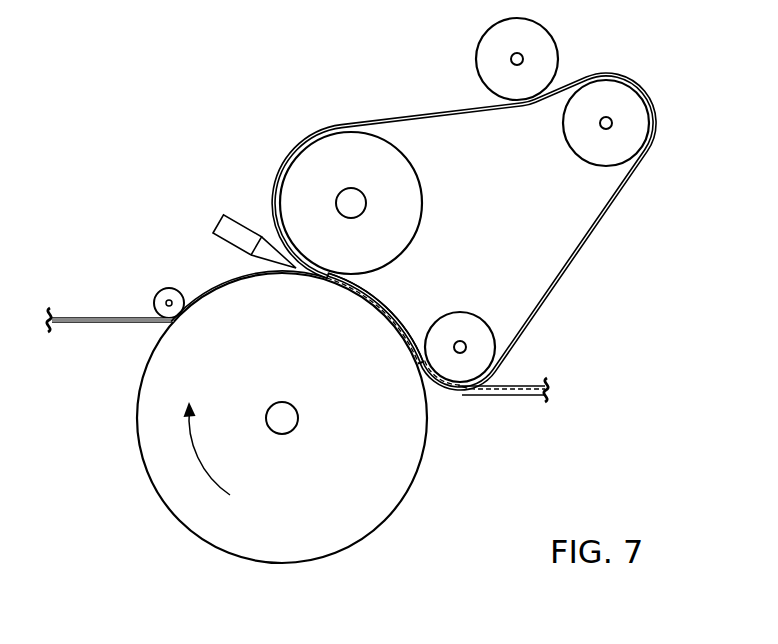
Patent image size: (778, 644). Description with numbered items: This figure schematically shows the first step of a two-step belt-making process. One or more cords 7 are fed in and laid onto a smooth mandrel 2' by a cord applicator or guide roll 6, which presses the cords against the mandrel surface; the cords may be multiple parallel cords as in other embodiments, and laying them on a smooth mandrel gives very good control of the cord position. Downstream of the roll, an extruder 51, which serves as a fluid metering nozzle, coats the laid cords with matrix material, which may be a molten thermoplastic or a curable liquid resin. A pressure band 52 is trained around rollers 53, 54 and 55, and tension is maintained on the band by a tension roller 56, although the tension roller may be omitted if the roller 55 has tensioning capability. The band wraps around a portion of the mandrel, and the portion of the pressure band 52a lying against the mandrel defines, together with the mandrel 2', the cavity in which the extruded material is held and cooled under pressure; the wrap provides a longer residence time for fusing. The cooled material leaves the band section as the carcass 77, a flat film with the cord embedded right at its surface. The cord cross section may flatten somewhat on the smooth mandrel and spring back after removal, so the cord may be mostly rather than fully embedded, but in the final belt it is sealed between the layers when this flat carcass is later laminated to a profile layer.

The smooth mandrel 2' is at (301, 418).
The cord applicator roll 6 is at (163, 293).
The cords 7 is at (83, 318).
The extruder 51 is at (225, 217).
The pressure band 52 is at (575, 252).
The portion of the pressure band 52a is at (390, 303).
The roller 53 is at (417, 168).
The roller 54 is at (475, 313).
The roller 55 is at (622, 98).
The tension roller 56 is at (545, 43).
The carcass 77 is at (505, 395).